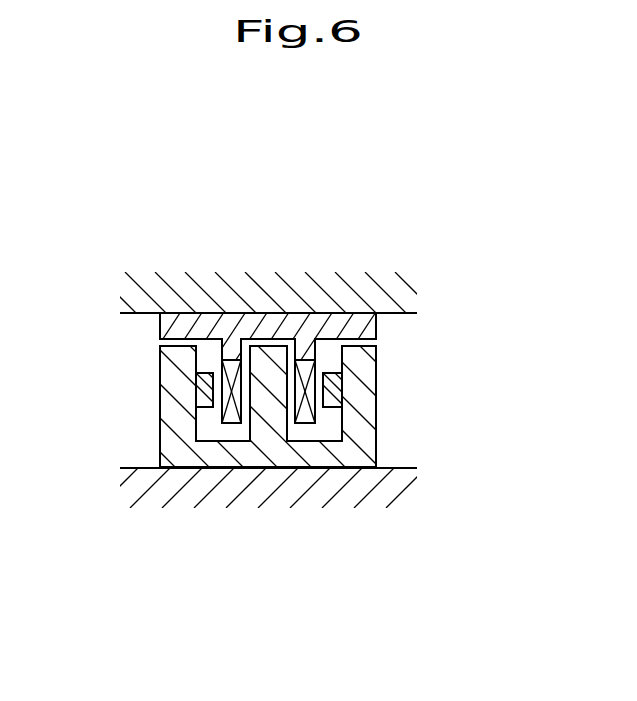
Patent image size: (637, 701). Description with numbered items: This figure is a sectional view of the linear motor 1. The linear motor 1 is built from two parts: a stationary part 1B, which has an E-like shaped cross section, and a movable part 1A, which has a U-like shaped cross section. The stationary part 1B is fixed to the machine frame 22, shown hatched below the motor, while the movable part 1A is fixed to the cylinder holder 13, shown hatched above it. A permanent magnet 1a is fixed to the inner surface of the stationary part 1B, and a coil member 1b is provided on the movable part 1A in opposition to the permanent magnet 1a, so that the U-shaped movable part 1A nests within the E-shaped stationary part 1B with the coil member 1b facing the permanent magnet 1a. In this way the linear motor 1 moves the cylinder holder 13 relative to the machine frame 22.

The linear motor 1 is at (299, 385).
The movable part 1A is at (195, 313).
The stationary part 1B is at (273, 450).
The permanent magnet 1a is at (200, 408).
The coil member 1b is at (222, 370).
The cylinder holder 13 is at (305, 288).
The machine frame 22 is at (197, 490).